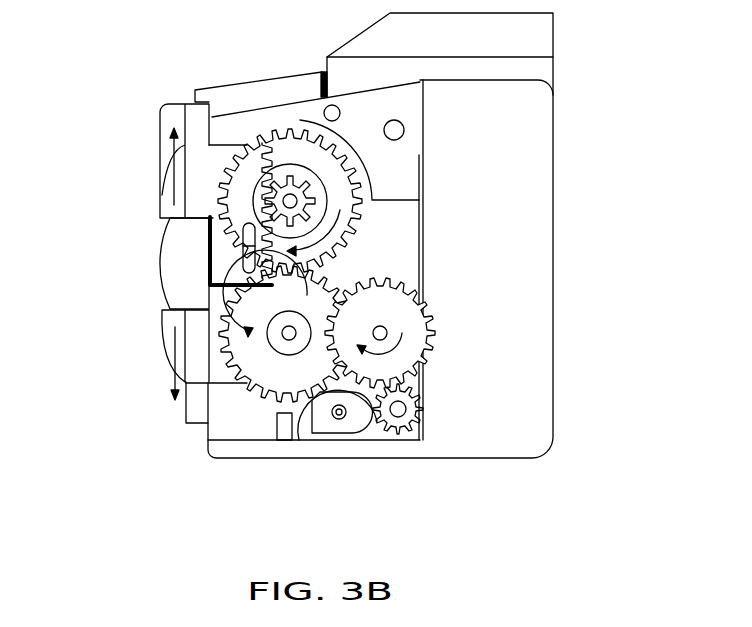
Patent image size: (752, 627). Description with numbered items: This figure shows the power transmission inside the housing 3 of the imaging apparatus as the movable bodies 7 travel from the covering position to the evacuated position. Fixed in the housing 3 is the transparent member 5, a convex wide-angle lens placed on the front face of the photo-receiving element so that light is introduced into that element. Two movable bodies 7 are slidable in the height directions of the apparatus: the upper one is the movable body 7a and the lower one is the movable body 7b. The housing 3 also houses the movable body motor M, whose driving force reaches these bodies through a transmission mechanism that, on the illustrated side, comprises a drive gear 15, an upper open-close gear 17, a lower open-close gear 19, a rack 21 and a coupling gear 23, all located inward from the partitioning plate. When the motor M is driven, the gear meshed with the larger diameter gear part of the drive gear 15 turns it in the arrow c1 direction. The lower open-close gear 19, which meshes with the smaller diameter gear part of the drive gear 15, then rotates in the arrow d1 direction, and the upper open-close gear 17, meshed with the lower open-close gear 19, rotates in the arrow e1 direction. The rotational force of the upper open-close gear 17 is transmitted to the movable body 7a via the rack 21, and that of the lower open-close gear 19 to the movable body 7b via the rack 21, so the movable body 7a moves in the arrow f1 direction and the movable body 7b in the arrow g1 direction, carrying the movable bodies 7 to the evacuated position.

The housing 3 is at (555, 160).
The transparent member 5 is at (163, 270).
The movable body 7 is at (128, 226).
The movable body 7a is at (161, 124).
The movable body 7b is at (122, 366).
The drive gear 15 is at (462, 325).
The upper open-close gear 17 is at (304, 151).
The lower open-close gear 19 is at (287, 396).
The rack 21 is at (268, 145).
The coupling gear 23 is at (400, 440).
The movable body motor M is at (352, 423).
The arrow f1 direction f1 is at (163, 158).
The arrow g1 direction g1 is at (164, 338).
The arrow e1 direction e1 is at (332, 226).
The arrow d1 direction d1 is at (265, 307).
The arrow c1 direction c1 is at (377, 338).